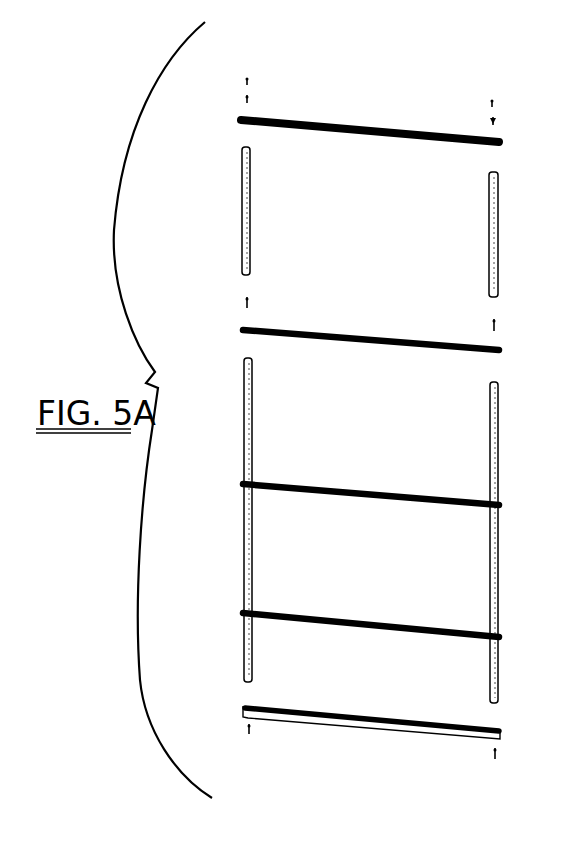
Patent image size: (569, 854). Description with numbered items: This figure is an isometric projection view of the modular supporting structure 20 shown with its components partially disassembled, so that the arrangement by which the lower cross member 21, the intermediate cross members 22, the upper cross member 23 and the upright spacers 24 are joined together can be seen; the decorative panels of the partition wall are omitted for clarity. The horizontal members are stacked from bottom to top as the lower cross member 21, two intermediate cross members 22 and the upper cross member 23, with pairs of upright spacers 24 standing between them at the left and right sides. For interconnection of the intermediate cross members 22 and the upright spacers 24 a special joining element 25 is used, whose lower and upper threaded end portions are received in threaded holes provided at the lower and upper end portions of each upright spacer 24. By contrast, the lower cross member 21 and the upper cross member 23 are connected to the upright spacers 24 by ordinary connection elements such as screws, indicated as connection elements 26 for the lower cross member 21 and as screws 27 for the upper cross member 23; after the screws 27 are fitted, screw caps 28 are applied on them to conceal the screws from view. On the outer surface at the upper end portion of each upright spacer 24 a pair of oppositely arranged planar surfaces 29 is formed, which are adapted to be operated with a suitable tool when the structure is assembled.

The modular supporting structure 20 is at (322, 80).
The lower cross member 21 is at (372, 706).
The intermediate cross member 22 is at (387, 338).
The upper cross member 23 is at (361, 125).
The upright spacer 24 is at (243, 212).
The joining element 25 is at (246, 302).
The connection element 26 is at (248, 729).
The screw 27 is at (246, 98).
The screw cap 28 is at (246, 81).
The planar surface 29 is at (244, 366).